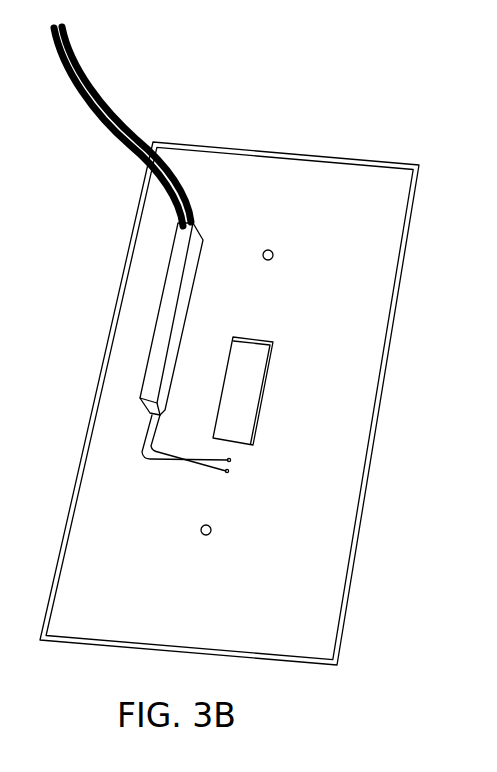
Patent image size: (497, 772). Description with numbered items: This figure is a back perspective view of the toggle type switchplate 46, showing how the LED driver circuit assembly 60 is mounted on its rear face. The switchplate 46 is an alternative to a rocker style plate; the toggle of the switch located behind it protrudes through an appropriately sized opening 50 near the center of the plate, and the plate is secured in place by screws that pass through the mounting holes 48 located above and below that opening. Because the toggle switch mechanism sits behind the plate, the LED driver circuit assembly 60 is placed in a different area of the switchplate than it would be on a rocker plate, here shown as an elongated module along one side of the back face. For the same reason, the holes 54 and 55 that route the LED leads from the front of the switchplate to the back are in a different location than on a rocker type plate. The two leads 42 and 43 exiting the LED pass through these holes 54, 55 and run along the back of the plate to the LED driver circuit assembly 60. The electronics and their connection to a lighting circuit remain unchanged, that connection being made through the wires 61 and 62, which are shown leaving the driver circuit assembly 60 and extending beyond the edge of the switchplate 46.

The lead 42 is at (188, 457).
The lead 43 is at (183, 460).
The toggle type switchplate 46 is at (322, 608).
The mounting holes 48 is at (273, 256).
The opening 50 is at (248, 390).
The hole 54 is at (233, 459).
The hole 55 is at (232, 470).
The LED driver circuit assembly 60 is at (152, 382).
The wire 61 is at (72, 73).
The wire 62 is at (78, 68).